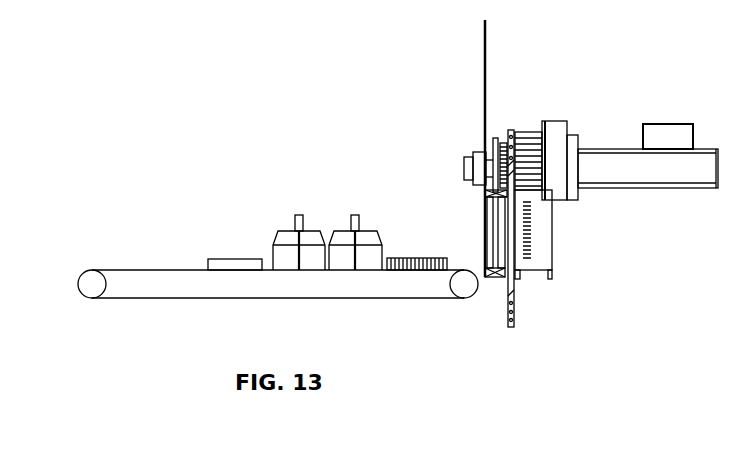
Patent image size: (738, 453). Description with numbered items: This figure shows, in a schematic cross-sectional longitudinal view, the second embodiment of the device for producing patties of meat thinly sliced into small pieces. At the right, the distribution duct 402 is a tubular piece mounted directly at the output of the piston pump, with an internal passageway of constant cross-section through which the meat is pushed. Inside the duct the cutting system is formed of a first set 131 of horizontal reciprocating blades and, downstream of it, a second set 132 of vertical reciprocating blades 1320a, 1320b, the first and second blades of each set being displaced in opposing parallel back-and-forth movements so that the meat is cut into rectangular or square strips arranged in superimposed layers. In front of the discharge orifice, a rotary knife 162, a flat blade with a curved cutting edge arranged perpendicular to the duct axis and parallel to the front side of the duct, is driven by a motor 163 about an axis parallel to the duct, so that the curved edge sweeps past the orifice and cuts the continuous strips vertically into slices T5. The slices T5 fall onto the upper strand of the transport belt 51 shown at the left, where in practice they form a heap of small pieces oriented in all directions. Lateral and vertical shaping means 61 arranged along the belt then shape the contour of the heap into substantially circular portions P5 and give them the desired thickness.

The conveyor belt 51 is at (150, 295).
The portions P5 is at (227, 258).
The lateral and vertical shaping means 61 is at (313, 233).
The slices T5 is at (412, 258).
The rotary knife 162 is at (483, 98).
The distribution duct 402 is at (548, 252).
The motor 163 is at (605, 149).
The first set of horizontal reciprocating blades 131 is at (535, 223).
The second set of vertical reciprocating blades 132 is at (504, 208).
The vertical reciprocating blade 1320a is at (510, 131).
The vertical reciprocating blade 1320b is at (507, 305).